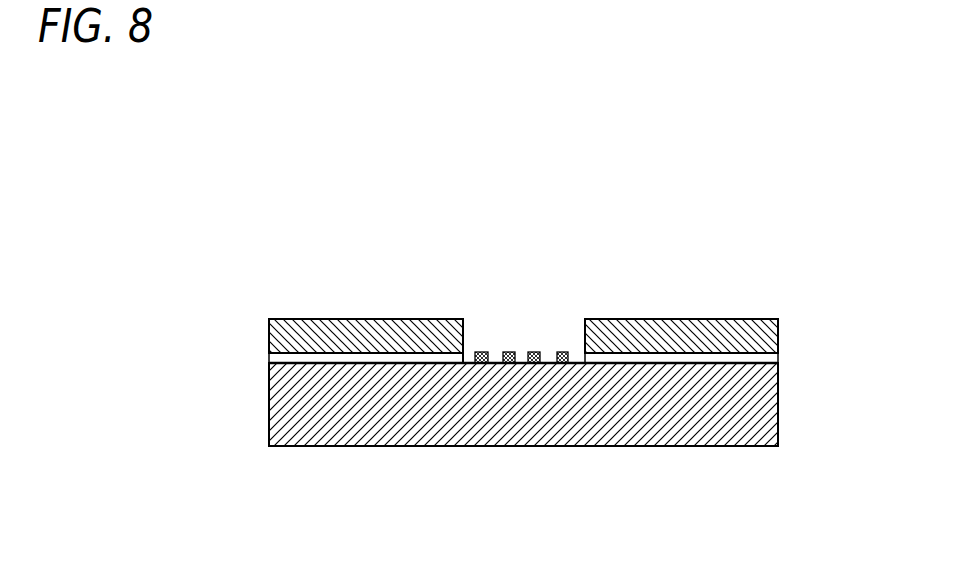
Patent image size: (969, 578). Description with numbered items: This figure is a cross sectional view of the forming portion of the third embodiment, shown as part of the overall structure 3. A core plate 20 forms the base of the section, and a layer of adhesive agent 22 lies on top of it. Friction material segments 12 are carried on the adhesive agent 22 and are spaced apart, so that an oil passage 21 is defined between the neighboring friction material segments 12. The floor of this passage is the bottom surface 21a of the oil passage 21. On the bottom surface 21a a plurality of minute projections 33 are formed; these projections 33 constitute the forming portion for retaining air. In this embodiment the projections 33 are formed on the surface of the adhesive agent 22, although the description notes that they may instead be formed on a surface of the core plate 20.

The wiring board 3 is at (655, 253).
The friction material segments 12 is at (337, 327).
The core plate 20 is at (357, 387).
The oil passage 21 is at (495, 363).
The bottom surface 21a is at (470, 357).
The adhesive agent 22 is at (283, 357).
The minute projections 33 is at (509, 351).